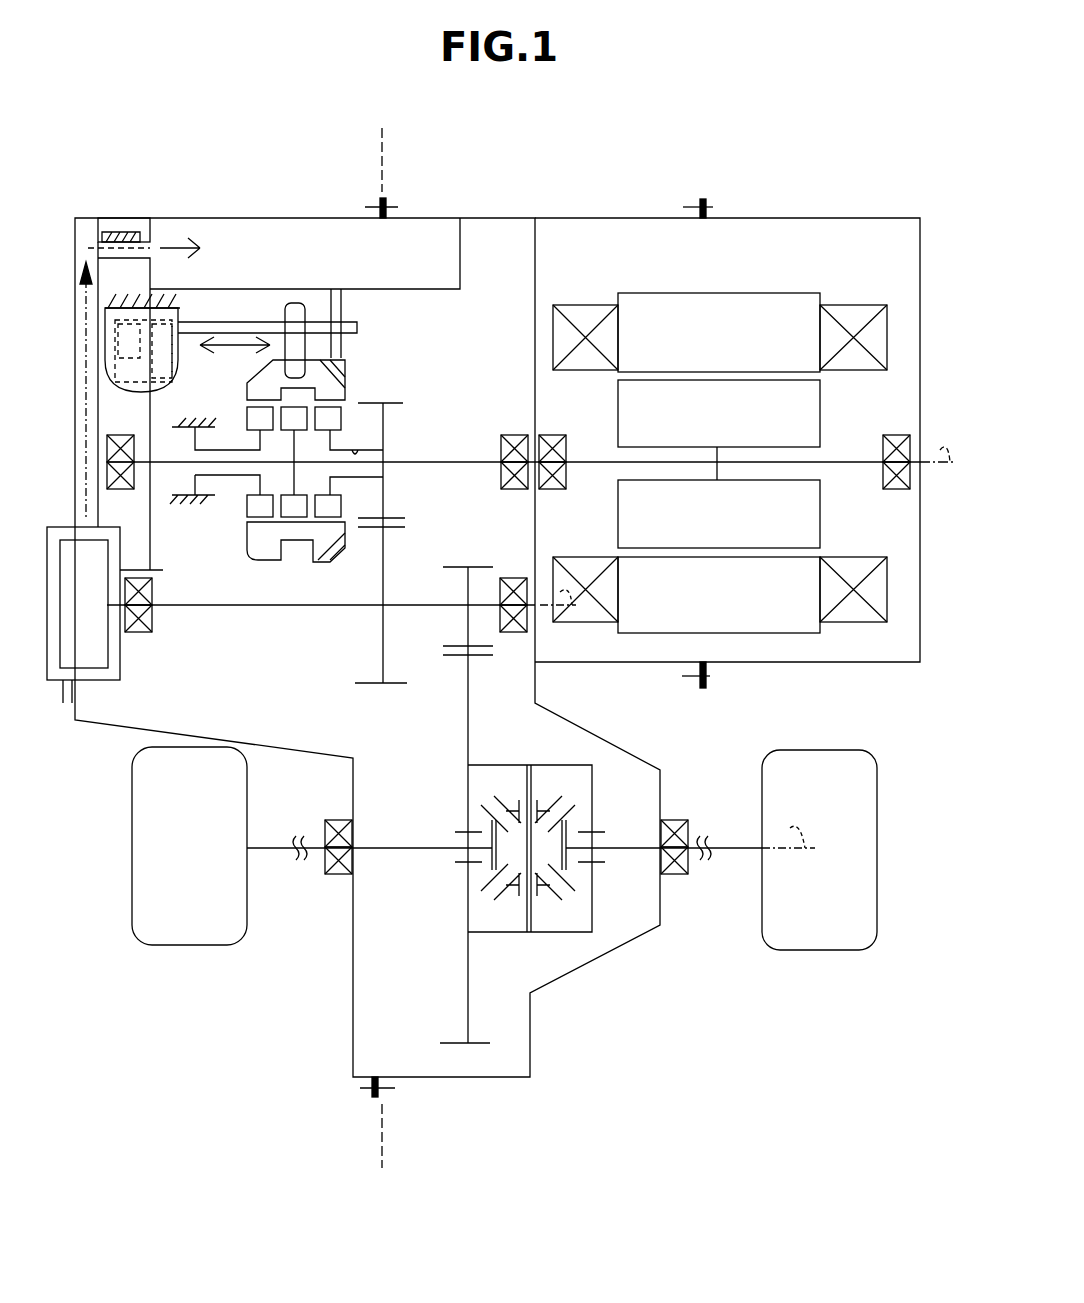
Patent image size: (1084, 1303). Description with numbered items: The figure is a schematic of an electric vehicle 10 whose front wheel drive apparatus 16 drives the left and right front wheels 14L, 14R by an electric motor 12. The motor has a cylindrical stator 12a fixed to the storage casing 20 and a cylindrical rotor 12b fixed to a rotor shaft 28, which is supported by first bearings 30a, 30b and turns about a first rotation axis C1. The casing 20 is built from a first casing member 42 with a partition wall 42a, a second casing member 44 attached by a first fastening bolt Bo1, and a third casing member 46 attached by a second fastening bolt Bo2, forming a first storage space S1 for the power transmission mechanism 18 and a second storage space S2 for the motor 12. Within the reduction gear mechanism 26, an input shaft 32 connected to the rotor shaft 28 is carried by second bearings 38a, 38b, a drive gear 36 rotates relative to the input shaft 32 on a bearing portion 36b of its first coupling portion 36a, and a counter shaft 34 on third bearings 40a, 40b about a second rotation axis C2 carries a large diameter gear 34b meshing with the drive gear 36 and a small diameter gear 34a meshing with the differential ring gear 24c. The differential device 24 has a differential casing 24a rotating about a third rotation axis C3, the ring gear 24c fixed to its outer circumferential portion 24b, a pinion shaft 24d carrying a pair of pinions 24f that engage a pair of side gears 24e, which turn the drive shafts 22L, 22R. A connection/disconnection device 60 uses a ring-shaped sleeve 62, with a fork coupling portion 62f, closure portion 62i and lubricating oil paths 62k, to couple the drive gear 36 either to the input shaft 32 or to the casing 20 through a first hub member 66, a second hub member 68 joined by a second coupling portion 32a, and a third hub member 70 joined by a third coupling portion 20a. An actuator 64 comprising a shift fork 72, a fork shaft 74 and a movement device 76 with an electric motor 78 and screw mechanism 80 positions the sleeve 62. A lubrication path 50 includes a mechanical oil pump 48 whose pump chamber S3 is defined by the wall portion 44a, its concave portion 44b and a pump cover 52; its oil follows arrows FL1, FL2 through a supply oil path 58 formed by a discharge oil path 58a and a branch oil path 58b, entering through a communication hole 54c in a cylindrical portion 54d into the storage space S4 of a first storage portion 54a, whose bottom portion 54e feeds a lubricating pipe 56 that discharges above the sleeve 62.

The electric vehicle 10 is at (858, 110).
The electric motor 12 is at (796, 640).
The cylindrical stator 12a is at (716, 302).
The cylindrical rotor 12b is at (646, 408).
The left front wheel 14L is at (180, 930).
The right front wheel 14R is at (812, 930).
The front wheel drive apparatus 16 is at (184, 148).
The power transmission mechanism 18 is at (600, 1060).
The storage casing 20 is at (122, 306).
The third coupling portion 20a is at (200, 446).
The left drive shaft 22L is at (272, 852).
The right drive shaft 22R is at (732, 852).
The differential device 24 is at (396, 746).
The differential casing 24a is at (576, 760).
The outer circumferential portion 24b is at (504, 763).
The differential ring gear 24c is at (446, 1046).
The pinion shaft 24d is at (531, 914).
The side gears 24e is at (480, 866).
The pinions 24f is at (552, 798).
The reduction gear mechanism 26 is at (460, 326).
The rotor shaft 28 is at (592, 470).
The first bearing 30a is at (566, 446).
The first bearing 30b is at (886, 478).
The input shaft 32 is at (452, 456).
The second coupling portion 32a is at (296, 484).
The counter shaft 34 is at (242, 608).
The small diameter gear 34a is at (454, 658).
The large diameter gear 34b is at (357, 686).
The drive gear 36 is at (400, 392).
The first coupling portion 36a is at (388, 496).
The bearing portion 36b is at (357, 456).
The second bearing 38a is at (538, 482).
The second bearing 38b is at (128, 494).
The third bearing 40a is at (498, 632).
The third bearing 40b is at (150, 630).
The first casing member 42 is at (548, 194).
The partition wall 42a is at (538, 300).
The second casing member 44 is at (246, 196).
The wall portion 44a is at (85, 214).
The concave portion 44b is at (164, 571).
The third casing member 46 is at (810, 216).
The mechanical oil pump 48 is at (108, 683).
The lubrication path 50 is at (102, 746).
The pump cover 52 is at (62, 702).
The first storage portion 54a is at (480, 268).
The communication hole 54c is at (148, 244).
The cylindrical portion 54d is at (138, 236).
The bottom portion 54e is at (402, 292).
The lubricating pipe 56 is at (340, 346).
The supply oil path 58 is at (66, 448).
The discharge oil path 58a is at (100, 412).
The branch oil path 58b is at (121, 217).
The connection/disconnection device 60 is at (340, 600).
The connection/disconnection sleeve 62 is at (386, 584).
The fork coupling portion 62f is at (272, 362).
The closure portion 62i is at (348, 366).
The lubricating oil paths 62k is at (348, 574).
The actuator 64 is at (262, 288).
The first hub member 66 is at (322, 504).
The second hub member 68 is at (292, 506).
The third hub member 70 is at (254, 506).
The shift fork 72 is at (300, 320).
The fork shaft 74 is at (266, 326).
The movement device 76 is at (208, 316).
The electric motor 78 is at (72, 350).
The screw mechanism 80 is at (176, 376).
The first fastening bolt Bo1 is at (372, 208).
The second fastening bolt Bo2 is at (712, 208).
The first rotation axis C1 is at (936, 470).
The second rotation axis C2 is at (558, 608).
The third rotation axis C3 is at (786, 848).
The oil flow arrow FL1 is at (84, 604).
The oil flow arrow FL2 is at (190, 250).
The first storage space S1 is at (408, 1046).
The second storage space S2 is at (666, 248).
The pump chamber S3 is at (82, 668).
The storage space S4 is at (396, 246).
The section line II- II is at (372, 144).